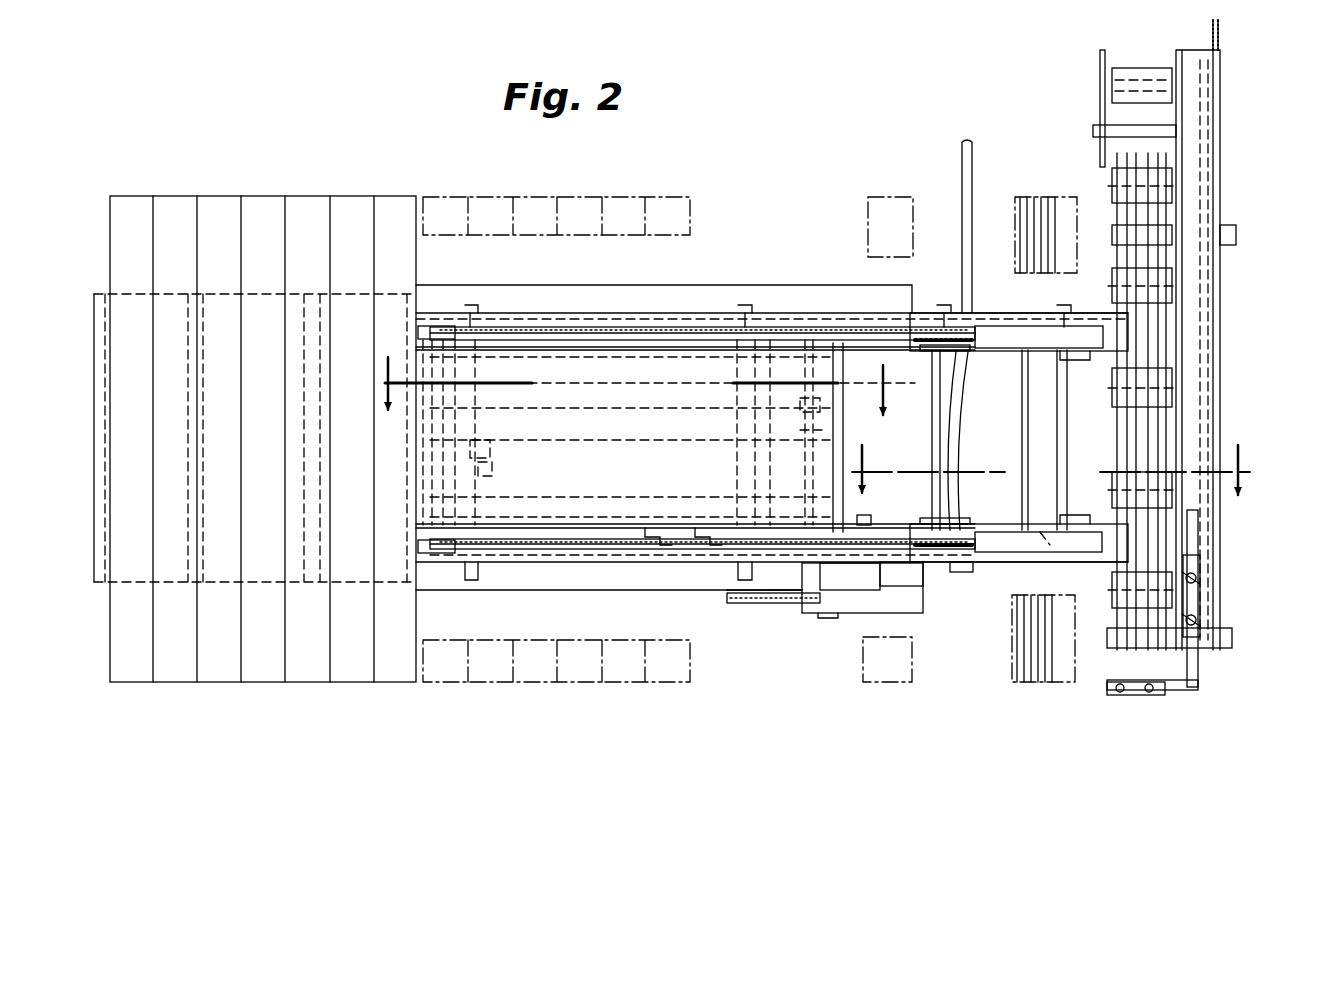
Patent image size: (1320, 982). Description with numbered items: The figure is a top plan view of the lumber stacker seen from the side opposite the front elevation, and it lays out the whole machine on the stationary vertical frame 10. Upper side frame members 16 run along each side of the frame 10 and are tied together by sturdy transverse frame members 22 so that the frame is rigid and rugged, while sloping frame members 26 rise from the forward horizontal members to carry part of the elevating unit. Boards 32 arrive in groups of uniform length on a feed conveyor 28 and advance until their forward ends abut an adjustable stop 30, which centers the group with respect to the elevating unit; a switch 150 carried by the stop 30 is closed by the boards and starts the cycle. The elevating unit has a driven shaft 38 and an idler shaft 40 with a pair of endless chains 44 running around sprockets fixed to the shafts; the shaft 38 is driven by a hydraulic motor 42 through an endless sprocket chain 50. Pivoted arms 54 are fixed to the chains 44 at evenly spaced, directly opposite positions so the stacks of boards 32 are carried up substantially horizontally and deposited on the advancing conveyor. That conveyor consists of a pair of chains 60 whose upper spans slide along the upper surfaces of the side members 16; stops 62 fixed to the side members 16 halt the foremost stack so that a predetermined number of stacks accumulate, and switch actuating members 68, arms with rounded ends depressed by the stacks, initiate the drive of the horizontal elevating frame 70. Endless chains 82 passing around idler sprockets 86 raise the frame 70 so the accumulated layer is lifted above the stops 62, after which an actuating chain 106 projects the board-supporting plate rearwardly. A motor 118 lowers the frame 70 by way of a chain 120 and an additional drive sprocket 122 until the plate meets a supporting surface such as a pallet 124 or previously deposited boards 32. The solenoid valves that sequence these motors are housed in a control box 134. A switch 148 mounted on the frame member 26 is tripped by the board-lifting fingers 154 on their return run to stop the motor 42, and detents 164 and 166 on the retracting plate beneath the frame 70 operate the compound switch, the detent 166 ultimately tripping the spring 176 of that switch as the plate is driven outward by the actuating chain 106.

The stationary vertical frame 10 is at (737, 265).
The upper side frame member 16 is at (840, 312).
The transverse frame members 22 is at (445, 420).
The sloping frame members 26 is at (1022, 313).
The feed conveyor 28 is at (1150, 68).
The adjustable stop 30 is at (1155, 695).
The boards 32 is at (345, 196).
The shaft 38 is at (940, 426).
The shaft 40 is at (1060, 432).
The hydraulic motor 42 is at (893, 588).
The endless chains 44 is at (945, 350).
The endless sprocket chain 50 is at (962, 572).
The pivoted arms 54 is at (1090, 352).
The chains 60 is at (592, 327).
The stops 62 is at (440, 325).
The switch actuating members 68 is at (717, 515).
The horizontal elevating frame 70 is at (846, 498).
The endless chains 82 is at (668, 327).
The idler sprockets 86 is at (472, 312).
The actuating chain 106 is at (650, 448).
The motor 118 is at (800, 590).
The chain 120 is at (740, 603).
The additional drive sprocket 122 is at (735, 596).
The pallet 124 is at (94, 478).
The control box 134 is at (838, 606).
The switch 148 is at (1047, 535).
The switch 150 is at (1130, 695).
The board-lifting fingers 154 is at (862, 524).
The detent 164 is at (488, 460).
The detent 166 is at (812, 462).
The spring 176 is at (492, 474).